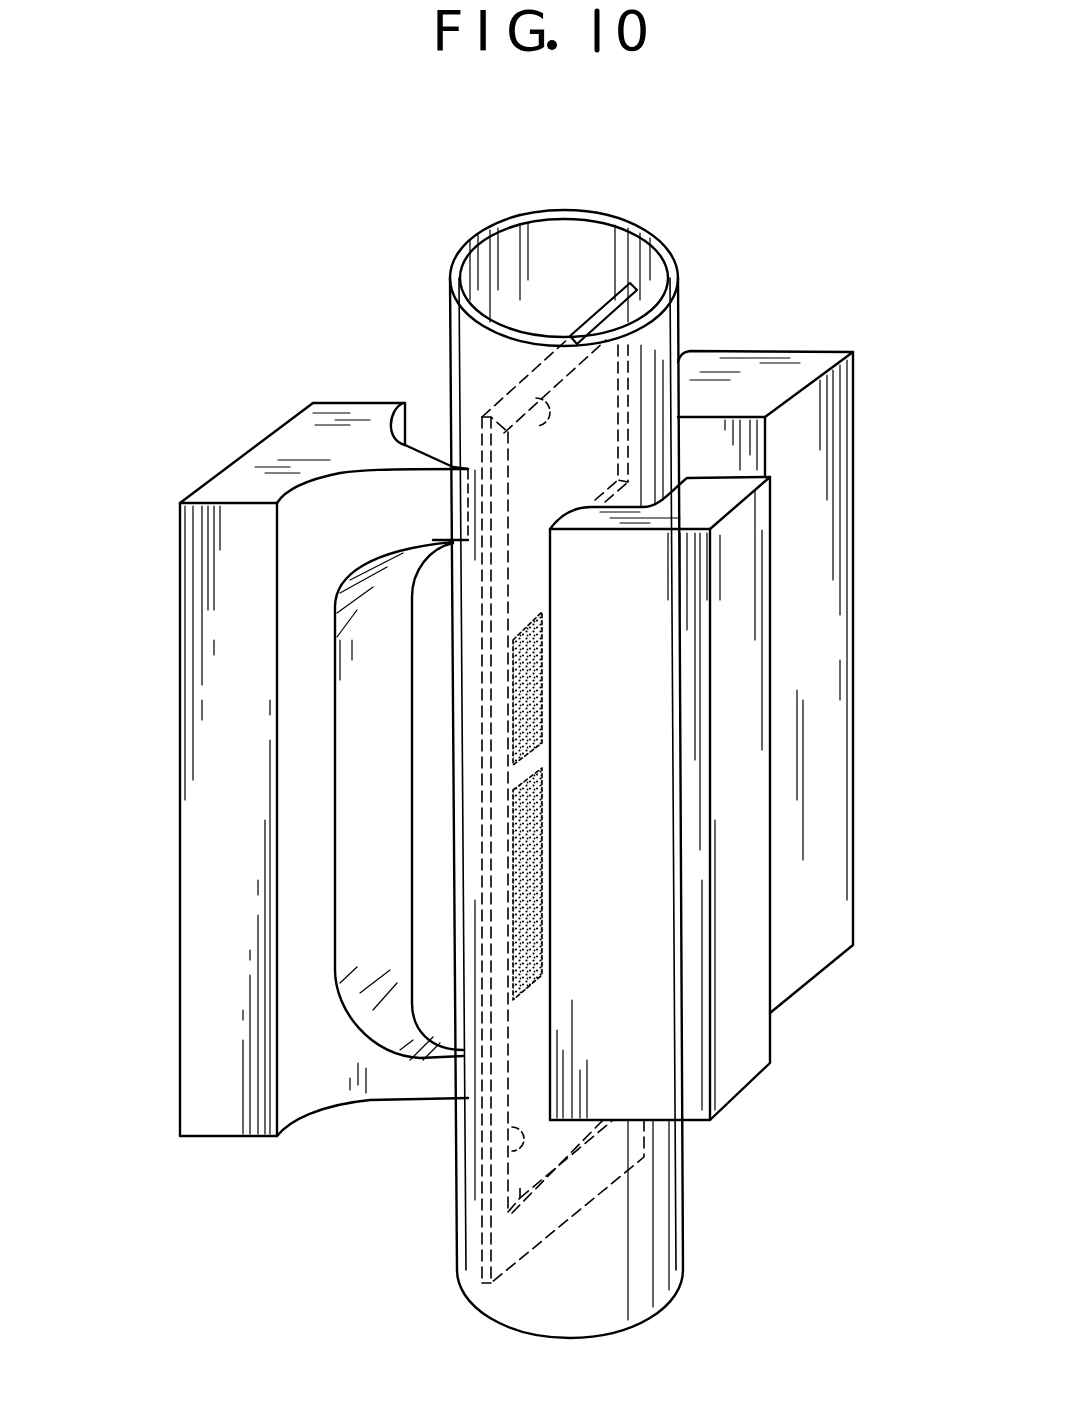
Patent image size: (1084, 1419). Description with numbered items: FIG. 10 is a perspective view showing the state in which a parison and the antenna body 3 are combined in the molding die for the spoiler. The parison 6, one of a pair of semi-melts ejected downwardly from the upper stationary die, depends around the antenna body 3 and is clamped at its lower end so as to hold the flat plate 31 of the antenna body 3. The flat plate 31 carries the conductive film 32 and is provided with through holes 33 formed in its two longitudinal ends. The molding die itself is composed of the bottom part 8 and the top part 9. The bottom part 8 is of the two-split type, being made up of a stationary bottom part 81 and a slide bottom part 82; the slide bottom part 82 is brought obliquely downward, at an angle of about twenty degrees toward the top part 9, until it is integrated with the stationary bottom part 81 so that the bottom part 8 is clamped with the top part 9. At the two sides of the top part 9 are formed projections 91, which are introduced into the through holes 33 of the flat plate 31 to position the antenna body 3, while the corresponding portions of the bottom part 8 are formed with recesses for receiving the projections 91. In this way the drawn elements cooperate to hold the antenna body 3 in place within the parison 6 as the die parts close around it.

The antenna body 3 is at (593, 317).
The parison 6 is at (468, 241).
The bottom part 8 is at (761, 735).
The top part 9 is at (180, 720).
The flat plate 31 is at (578, 1182).
The conductive film 32 is at (546, 705).
The through holes 33 is at (530, 424).
The stationary bottom part 81 is at (805, 518).
The slide bottom part 82 is at (743, 1030).
The projections 91 is at (437, 507).